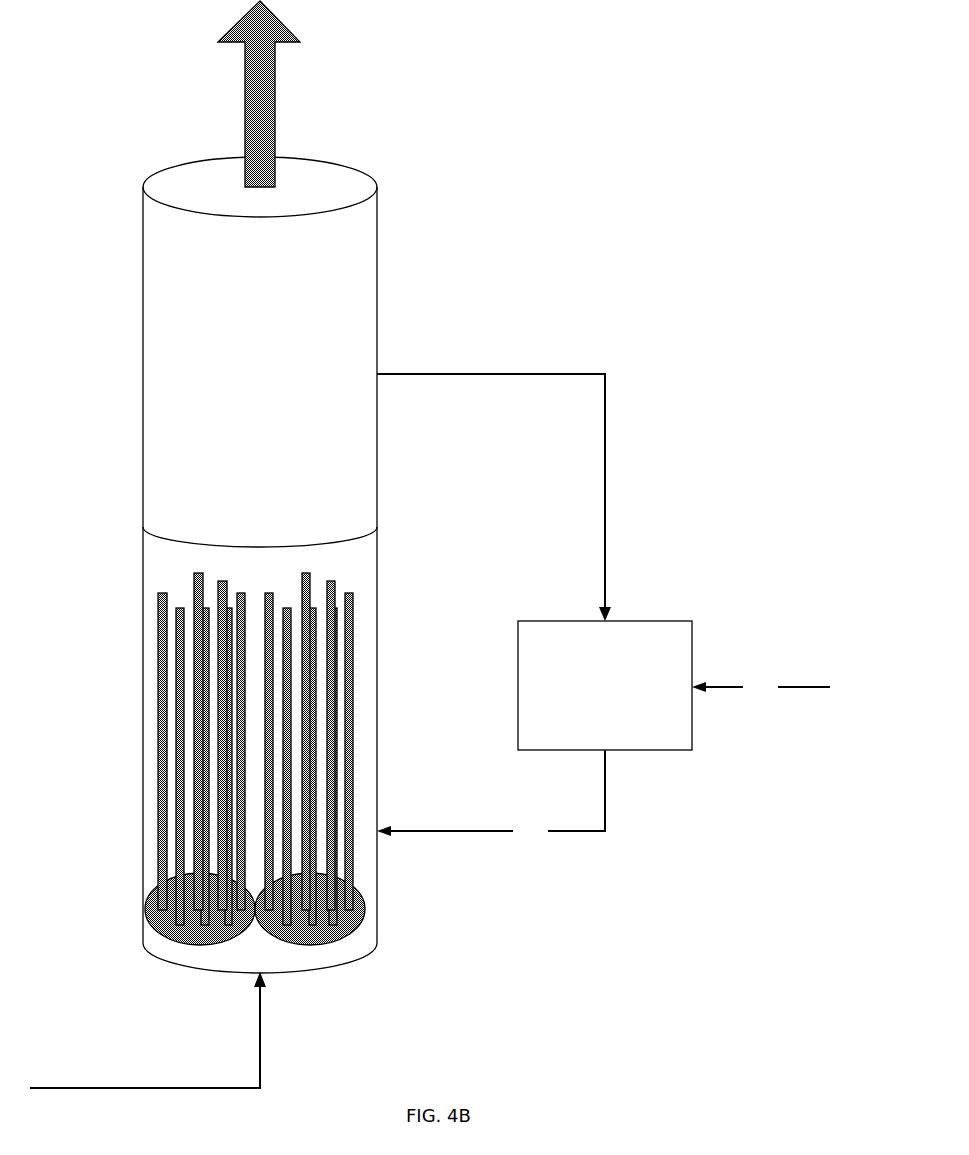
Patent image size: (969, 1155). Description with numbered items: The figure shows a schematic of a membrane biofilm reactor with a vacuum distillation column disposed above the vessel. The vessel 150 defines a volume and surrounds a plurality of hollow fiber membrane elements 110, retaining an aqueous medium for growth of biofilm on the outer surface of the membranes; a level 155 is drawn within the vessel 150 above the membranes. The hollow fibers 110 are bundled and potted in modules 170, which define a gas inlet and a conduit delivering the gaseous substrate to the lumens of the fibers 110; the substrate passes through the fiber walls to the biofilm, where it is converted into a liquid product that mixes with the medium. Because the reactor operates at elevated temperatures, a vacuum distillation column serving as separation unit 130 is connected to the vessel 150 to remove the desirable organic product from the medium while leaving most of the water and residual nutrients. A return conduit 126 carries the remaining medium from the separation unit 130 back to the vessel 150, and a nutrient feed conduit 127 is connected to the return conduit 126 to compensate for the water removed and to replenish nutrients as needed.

The separation unit 130 is at (260, 487).
The separation level 155 is at (360, 576).
The module 170 is at (167, 922).
The hollow fiber membrane element 110 is at (178, 768).
The vessel 150 is at (68, 597).
The nutrient feed conduit 127 is at (761, 687).
The return conduit 126 is at (491, 796).